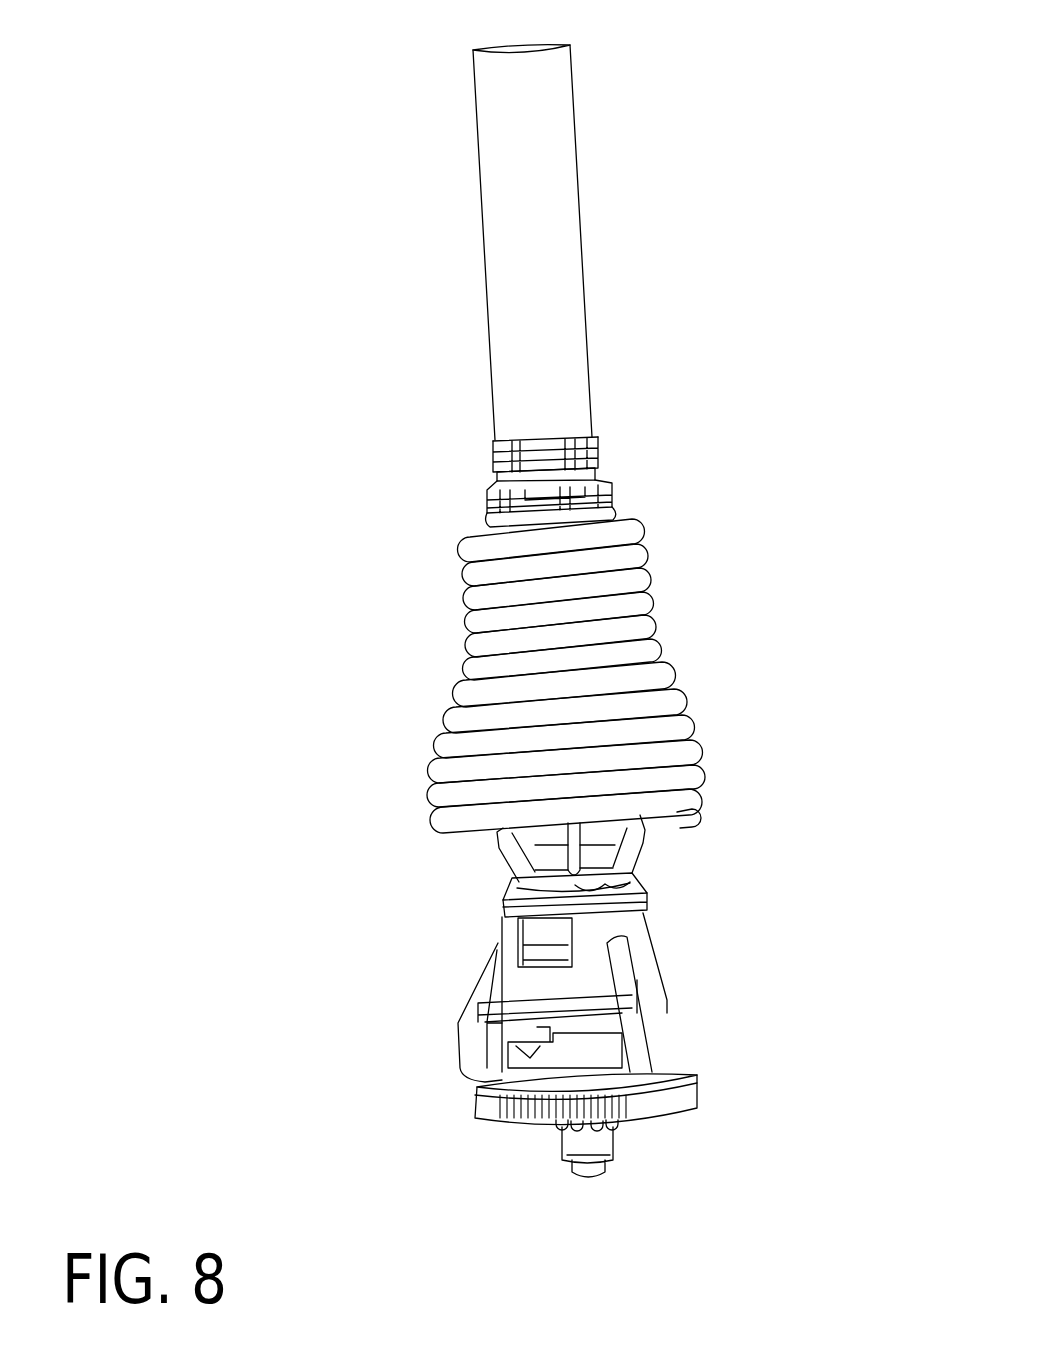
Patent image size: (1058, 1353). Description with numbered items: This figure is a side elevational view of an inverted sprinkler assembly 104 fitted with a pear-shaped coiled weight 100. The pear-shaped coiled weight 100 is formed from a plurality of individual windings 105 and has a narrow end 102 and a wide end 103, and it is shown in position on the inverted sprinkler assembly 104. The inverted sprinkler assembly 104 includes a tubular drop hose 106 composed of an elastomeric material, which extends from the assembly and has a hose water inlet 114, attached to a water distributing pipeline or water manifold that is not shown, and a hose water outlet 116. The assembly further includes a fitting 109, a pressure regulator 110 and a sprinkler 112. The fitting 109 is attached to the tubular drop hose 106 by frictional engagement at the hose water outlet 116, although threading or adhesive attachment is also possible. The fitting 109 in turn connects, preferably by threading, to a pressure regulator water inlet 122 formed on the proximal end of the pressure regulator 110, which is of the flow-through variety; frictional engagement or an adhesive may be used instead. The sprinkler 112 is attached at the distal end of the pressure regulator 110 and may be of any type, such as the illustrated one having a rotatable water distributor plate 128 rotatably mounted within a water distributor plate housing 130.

The inverted sprinkler assembly 104 is at (748, 120).
The tubular drop hose 106 is at (500, 233).
The hose water inlet 114 is at (525, 50).
The hose water outlet 116 is at (572, 375).
The fitting 109 is at (607, 487).
The pressure regulator water inlet 122 is at (488, 493).
The pear-shaped coiled weight 100 is at (640, 628).
The narrow end 102 is at (628, 580).
The individual windings 105 is at (482, 694).
The wide end 103 is at (688, 748).
The pressure regulator 110 is at (675, 873).
The sprinkler 112 is at (700, 979).
The rotatable water distributor plate 128 is at (533, 1053).
The water distributor plate housing 130 is at (477, 1055).